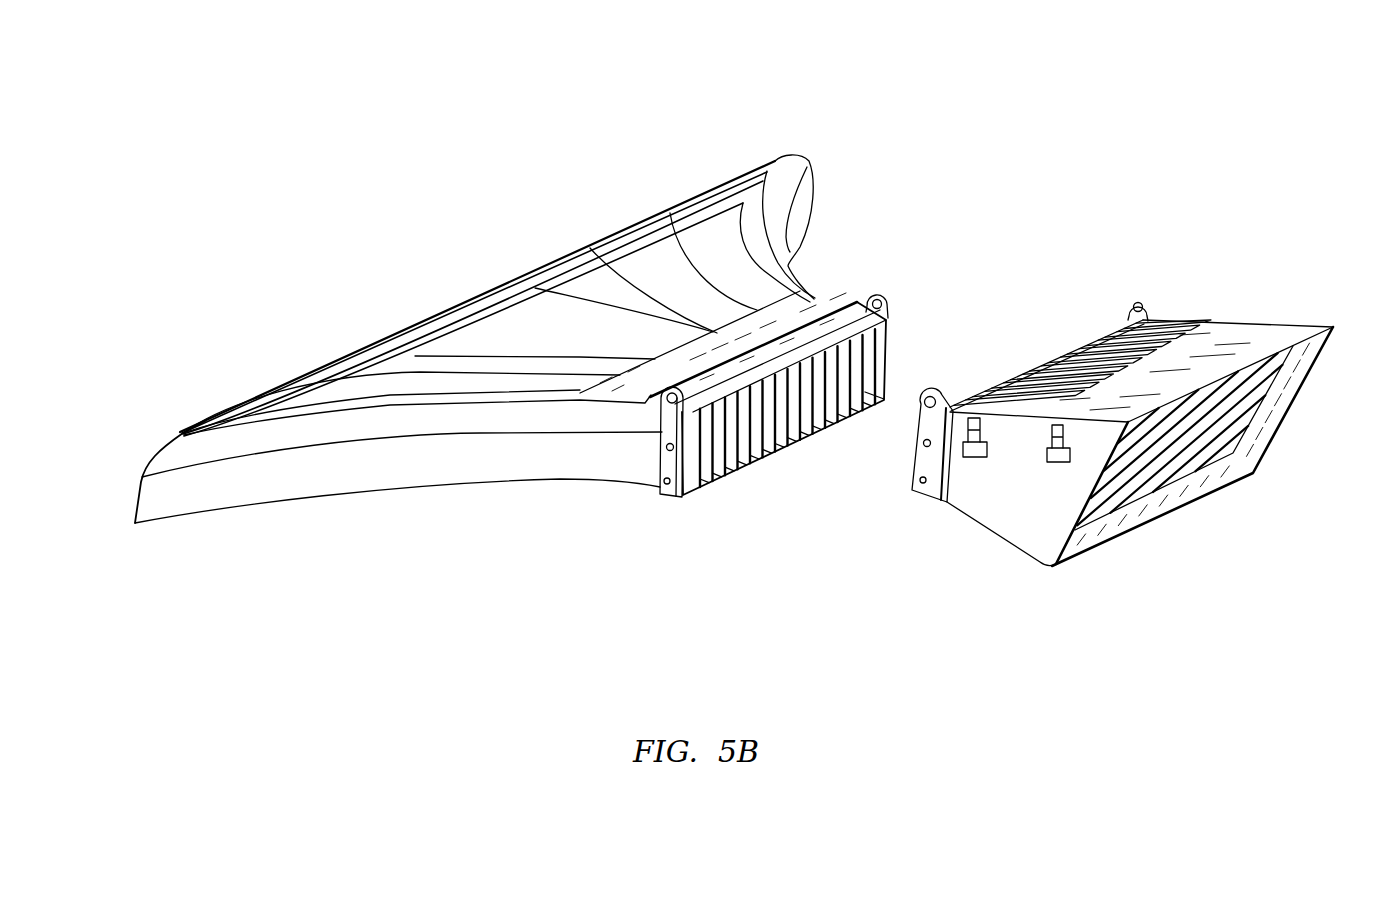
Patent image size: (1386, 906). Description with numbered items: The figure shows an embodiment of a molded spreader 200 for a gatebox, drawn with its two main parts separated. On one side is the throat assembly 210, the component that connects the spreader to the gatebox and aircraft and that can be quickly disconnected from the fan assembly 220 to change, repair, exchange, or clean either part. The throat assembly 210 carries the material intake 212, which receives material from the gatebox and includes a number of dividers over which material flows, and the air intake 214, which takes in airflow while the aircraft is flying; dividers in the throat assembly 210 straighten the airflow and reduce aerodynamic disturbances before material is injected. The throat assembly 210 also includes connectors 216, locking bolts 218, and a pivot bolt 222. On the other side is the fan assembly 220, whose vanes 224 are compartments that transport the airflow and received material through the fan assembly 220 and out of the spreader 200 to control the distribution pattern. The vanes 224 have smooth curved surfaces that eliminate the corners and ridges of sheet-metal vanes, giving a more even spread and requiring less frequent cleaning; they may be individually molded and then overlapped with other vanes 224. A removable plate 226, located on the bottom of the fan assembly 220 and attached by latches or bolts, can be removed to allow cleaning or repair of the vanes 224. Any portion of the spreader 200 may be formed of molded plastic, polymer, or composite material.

The molded spreader 200 is at (1222, 78).
The throat assembly 210 is at (1270, 322).
The material intake 212 is at (1168, 335).
The air intake 214 is at (1212, 442).
The connectors 216 is at (1053, 463).
The locking bolts 218 is at (664, 484).
The fan assembly 220 is at (241, 506).
The pivot bolt 222 is at (886, 294).
The vanes 224 is at (520, 313).
The removable plate 226 is at (686, 486).